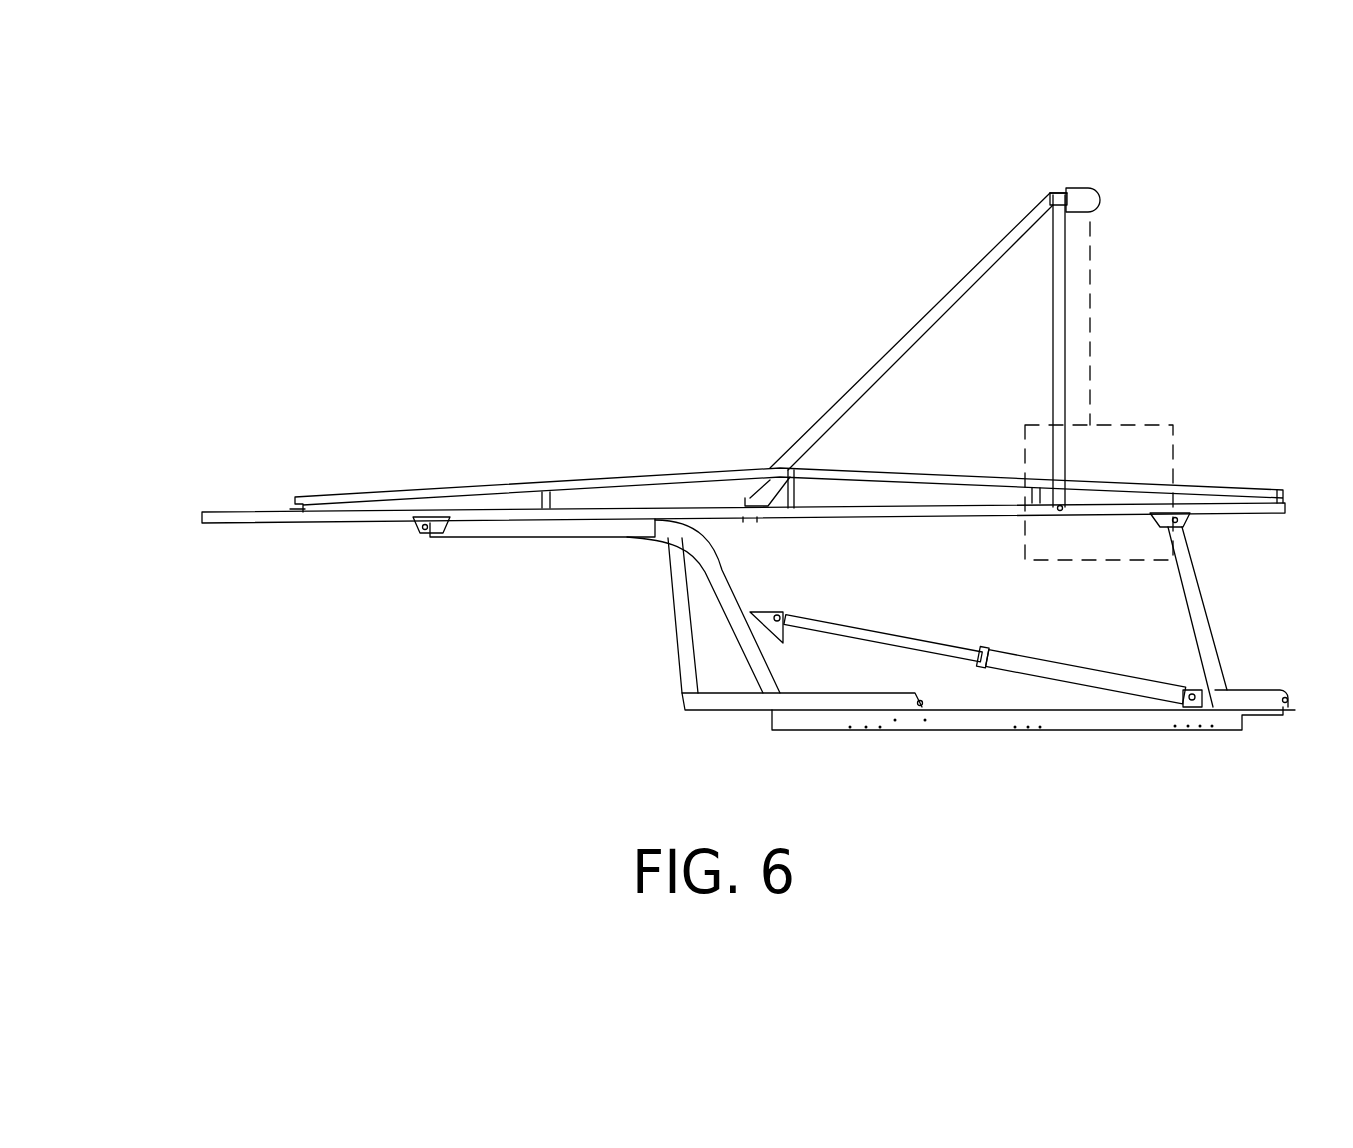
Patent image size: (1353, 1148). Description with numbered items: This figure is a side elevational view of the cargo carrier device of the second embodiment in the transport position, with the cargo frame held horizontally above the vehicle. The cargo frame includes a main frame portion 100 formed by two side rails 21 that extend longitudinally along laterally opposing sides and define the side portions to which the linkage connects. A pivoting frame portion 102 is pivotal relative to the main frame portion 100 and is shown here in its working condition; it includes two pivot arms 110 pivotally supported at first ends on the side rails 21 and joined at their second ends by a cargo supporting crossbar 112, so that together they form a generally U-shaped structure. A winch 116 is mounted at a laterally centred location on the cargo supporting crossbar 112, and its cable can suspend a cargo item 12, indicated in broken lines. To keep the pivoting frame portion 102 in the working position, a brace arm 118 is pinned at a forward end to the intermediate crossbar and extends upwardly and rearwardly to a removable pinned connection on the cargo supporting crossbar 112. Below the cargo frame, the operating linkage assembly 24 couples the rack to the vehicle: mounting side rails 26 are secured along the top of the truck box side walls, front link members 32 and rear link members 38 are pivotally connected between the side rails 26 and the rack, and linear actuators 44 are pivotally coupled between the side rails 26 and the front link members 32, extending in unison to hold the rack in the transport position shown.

The main frame portion 100 is at (196, 517).
The side rails 21 is at (888, 512).
The pivoting frame portion 102 is at (1048, 313).
The pivot arms 110 is at (1058, 288).
The cargo supporting crossbar 112 is at (1058, 190).
The winch 116 is at (1100, 197).
The brace arm 118 is at (912, 335).
The cargo items 12 is at (1177, 450).
The operating linkage assembly 24 is at (586, 636).
The side rails 26 is at (1000, 727).
The front link members 32 is at (728, 590).
The rear link members 38 is at (1198, 596).
The linear actuators 44 is at (1047, 668).